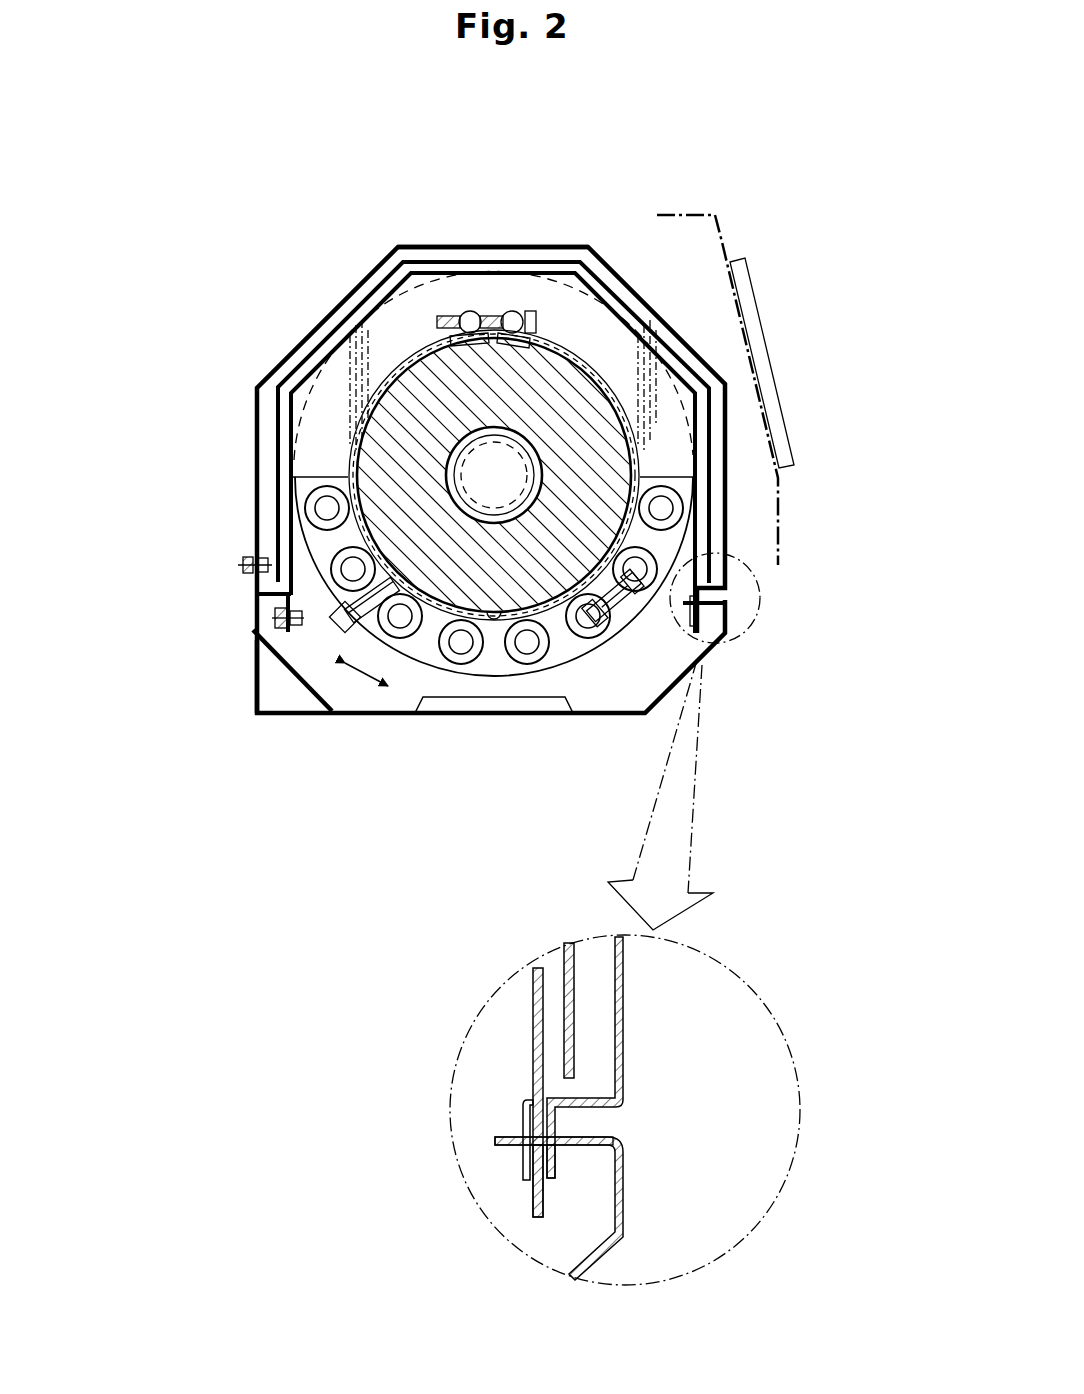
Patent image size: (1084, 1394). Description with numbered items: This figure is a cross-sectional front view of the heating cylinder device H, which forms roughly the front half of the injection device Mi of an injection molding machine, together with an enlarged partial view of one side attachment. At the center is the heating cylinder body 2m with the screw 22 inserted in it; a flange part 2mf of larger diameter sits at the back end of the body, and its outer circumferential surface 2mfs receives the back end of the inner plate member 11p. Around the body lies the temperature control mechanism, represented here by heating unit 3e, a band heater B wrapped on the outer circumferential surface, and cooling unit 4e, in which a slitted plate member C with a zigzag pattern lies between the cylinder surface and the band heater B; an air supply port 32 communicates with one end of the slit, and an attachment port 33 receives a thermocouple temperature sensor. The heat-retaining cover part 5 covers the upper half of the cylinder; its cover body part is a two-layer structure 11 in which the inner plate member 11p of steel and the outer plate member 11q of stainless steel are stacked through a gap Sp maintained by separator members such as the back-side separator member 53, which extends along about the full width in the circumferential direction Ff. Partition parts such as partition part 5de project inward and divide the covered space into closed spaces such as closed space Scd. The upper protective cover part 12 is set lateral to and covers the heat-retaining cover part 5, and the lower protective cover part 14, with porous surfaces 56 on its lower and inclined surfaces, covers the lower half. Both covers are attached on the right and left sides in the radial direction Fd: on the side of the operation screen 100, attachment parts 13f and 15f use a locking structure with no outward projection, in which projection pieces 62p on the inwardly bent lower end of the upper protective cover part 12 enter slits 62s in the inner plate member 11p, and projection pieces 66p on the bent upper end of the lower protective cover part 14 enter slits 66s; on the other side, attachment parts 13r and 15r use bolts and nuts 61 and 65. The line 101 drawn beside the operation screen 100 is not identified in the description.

The heating cylinder body 2m is at (360, 412).
The flange part 2mf is at (656, 614).
The outer circumferential surface of flange part 2mfs is at (598, 280).
The screw 22 is at (506, 505).
The heating unit 3e is at (557, 650).
The air supply port 32 is at (603, 622).
The attachment port of temperature sensor 33 is at (262, 652).
The cooling unit 4e is at (492, 620).
The heat-retaining cover part 5 is at (521, 253).
The partition part 5de is at (305, 497).
The multi-layer structure 11 is at (270, 457).
The inner plate member 11p is at (495, 272).
The outer plate member 11q is at (405, 262).
The upper protective cover part 12 is at (259, 418).
The attachment parts 13r is at (248, 585).
The attachment parts 13f is at (735, 597).
The lower protective cover part 14 is at (355, 713).
The attachment parts 15r is at (286, 614).
The attachment parts 15f is at (716, 614).
The back-side separator member 53 is at (711, 420).
The porous surfaces 56 is at (254, 632).
The bolts and nuts 61 is at (243, 562).
The slits 62s is at (523, 1105).
The projection pieces 62p is at (534, 1200).
The bolts and nuts 65 is at (274, 617).
The projection pieces 66p is at (495, 1141).
The slits 66s is at (546, 1165).
The operation screen 100 is at (758, 306).
The vehicle body line 101 is at (723, 238).
The injection device Mi is at (316, 238).
The heating cylinder device H is at (291, 286).
The gap Sp is at (605, 288).
The closed space Scd is at (617, 358).
The plate member C is at (610, 523).
The band heater B is at (418, 625).
The circumferential direction Ff is at (271, 646).
The radial direction Fd is at (368, 828).